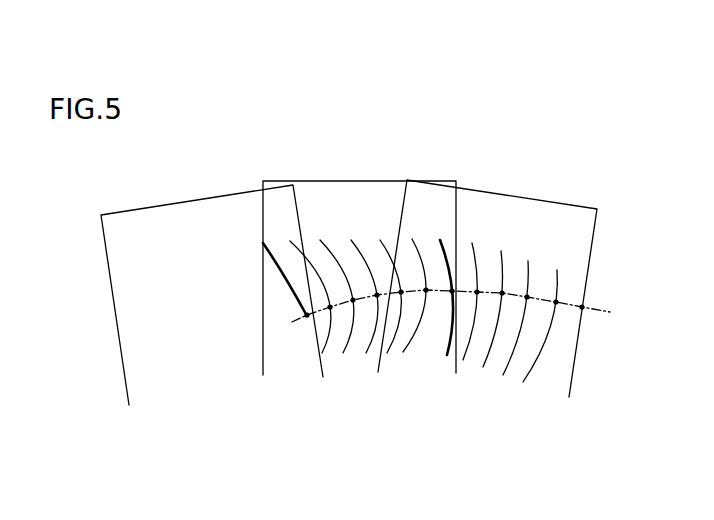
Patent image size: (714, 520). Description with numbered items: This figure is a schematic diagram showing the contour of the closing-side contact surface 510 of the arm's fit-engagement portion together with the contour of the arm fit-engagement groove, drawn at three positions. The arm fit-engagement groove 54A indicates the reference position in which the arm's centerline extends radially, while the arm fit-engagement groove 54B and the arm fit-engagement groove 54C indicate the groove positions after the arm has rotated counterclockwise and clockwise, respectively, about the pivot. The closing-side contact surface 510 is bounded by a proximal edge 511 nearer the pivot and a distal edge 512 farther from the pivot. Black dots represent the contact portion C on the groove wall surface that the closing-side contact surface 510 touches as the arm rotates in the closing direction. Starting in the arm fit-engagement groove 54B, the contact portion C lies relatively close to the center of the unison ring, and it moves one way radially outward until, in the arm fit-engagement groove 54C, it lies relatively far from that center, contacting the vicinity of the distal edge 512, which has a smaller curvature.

The arm fit-engagement groove 54A is at (360, 197).
The arm fit-engagement groove 54B is at (149, 225).
The arm fit-engagement groove 54C is at (549, 217).
The closing-side contact surface 510 is at (281, 253).
The proximal edge 511 is at (307, 316).
The distal edge 512 is at (263, 243).
The contact portion C is at (307, 316).